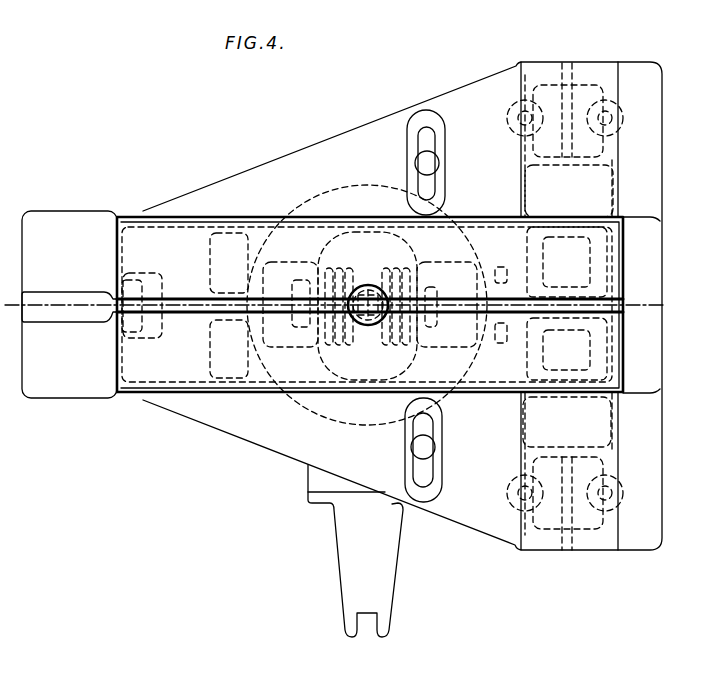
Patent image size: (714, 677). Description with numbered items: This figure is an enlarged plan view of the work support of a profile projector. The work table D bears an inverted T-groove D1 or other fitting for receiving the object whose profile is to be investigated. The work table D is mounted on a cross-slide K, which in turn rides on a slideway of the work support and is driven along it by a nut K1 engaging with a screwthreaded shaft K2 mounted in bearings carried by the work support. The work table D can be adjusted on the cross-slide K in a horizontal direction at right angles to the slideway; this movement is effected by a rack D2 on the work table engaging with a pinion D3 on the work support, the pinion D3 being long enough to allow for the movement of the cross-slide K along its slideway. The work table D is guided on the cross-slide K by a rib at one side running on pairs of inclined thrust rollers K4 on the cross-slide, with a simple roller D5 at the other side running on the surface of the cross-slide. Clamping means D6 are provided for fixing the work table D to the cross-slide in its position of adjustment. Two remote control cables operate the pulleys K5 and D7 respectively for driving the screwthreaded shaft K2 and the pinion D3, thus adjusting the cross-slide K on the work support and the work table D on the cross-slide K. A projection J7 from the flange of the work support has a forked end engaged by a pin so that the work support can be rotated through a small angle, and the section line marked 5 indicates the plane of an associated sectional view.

The cross-slide K is at (88, 388).
The nut K1 is at (228, 322).
The screwthreaded shaft K2 is at (195, 313).
The inclined thrust rollers K4 is at (573, 84).
The pulley K5 is at (347, 268).
The work table D is at (178, 263).
The inverted T-groove D1 is at (227, 306).
The rack D2 is at (497, 332).
The pinion D3 is at (461, 322).
The roller D5 is at (125, 280).
The clamping means D6 is at (432, 168).
The pulley D7 is at (383, 268).
The projection J7 is at (358, 518).
The section line 5- 5 is at (30, 310).